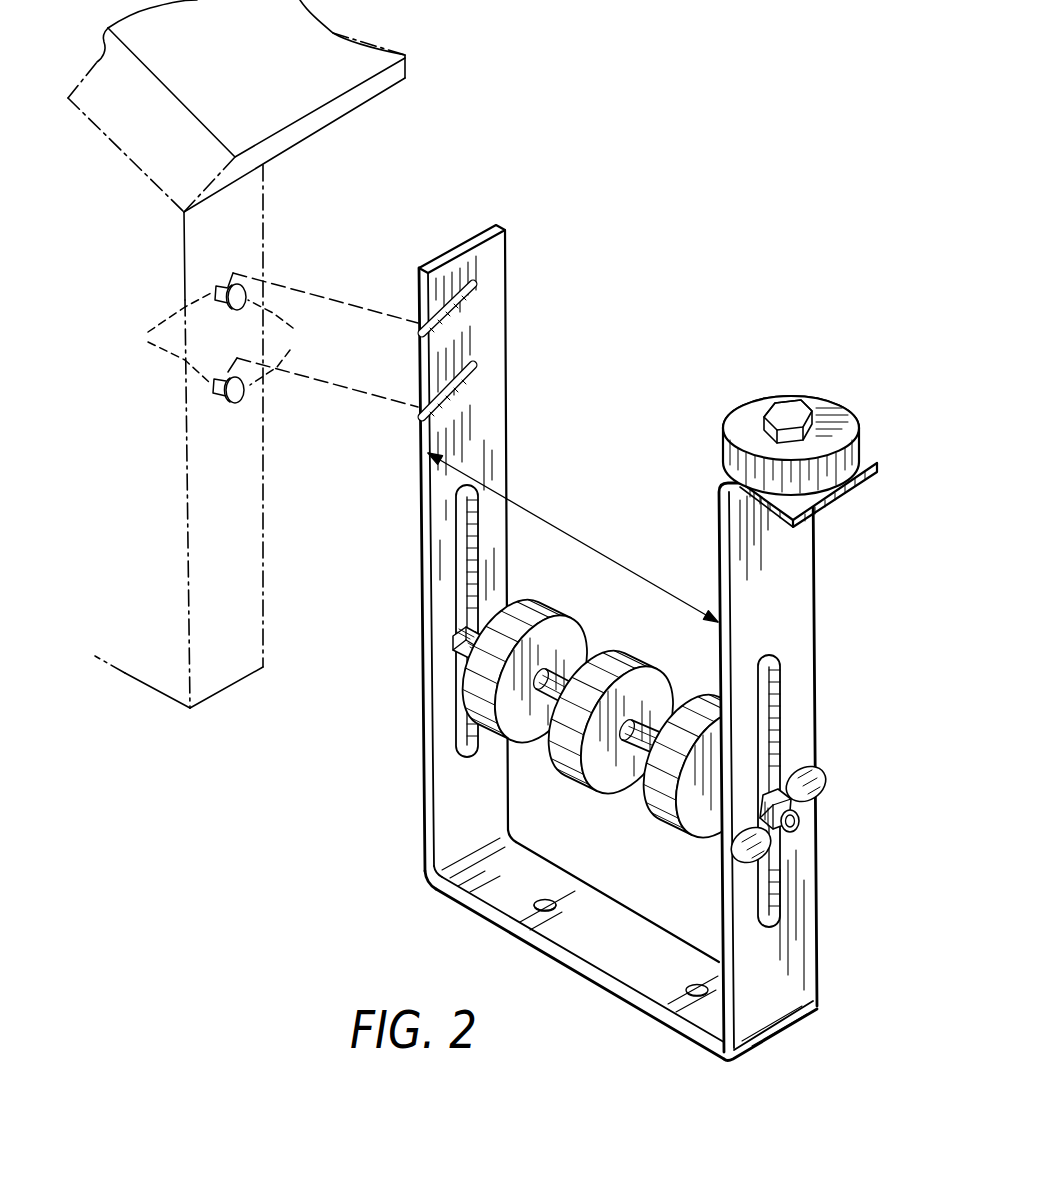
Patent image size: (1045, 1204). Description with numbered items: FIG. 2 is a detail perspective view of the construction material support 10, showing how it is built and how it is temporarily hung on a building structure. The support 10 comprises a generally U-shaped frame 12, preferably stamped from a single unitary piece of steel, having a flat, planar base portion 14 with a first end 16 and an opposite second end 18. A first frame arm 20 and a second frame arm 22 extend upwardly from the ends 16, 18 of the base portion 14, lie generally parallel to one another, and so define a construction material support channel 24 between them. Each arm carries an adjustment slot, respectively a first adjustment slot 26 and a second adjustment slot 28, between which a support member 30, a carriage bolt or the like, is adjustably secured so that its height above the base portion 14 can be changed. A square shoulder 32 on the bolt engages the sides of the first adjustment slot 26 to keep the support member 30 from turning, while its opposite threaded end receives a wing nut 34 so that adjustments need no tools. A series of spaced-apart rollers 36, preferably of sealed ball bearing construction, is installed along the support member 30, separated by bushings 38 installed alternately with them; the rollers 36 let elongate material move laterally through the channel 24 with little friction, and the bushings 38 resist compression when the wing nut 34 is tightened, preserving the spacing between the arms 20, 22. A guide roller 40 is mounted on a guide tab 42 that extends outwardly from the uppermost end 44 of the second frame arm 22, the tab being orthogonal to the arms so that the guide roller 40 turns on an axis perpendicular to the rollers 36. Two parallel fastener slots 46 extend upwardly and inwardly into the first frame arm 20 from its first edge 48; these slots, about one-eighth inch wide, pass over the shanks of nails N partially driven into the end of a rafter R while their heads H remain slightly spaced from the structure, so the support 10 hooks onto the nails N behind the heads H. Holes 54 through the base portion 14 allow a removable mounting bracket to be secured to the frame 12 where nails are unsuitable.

The support 10 is at (632, 664).
The frame 12 is at (424, 817).
The base portion 14 is at (630, 947).
The first end 16 is at (425, 878).
The second end 18 is at (780, 1027).
The first frame arm 20 is at (481, 802).
The second frame arm 22 is at (782, 613).
The construction material support channel 24 is at (587, 545).
The first adjustment slot 26 is at (457, 573).
The second adjustment slot 28 is at (768, 703).
The support member 30 is at (805, 822).
The square shoulder 32 is at (455, 621).
The wing nut 34 is at (822, 790).
The rollers 36 is at (537, 745).
The bushings 38 is at (668, 722).
The guide roller 40 is at (853, 420).
The guide tab 42 is at (862, 487).
The uppermost end 44 is at (726, 412).
The fastener slots 46 is at (418, 325).
The first edge 48 is at (418, 480).
The holes 54 is at (550, 902).
The nails N is at (271, 328).
The heads H is at (315, 353).
The rafter R is at (213, 712).